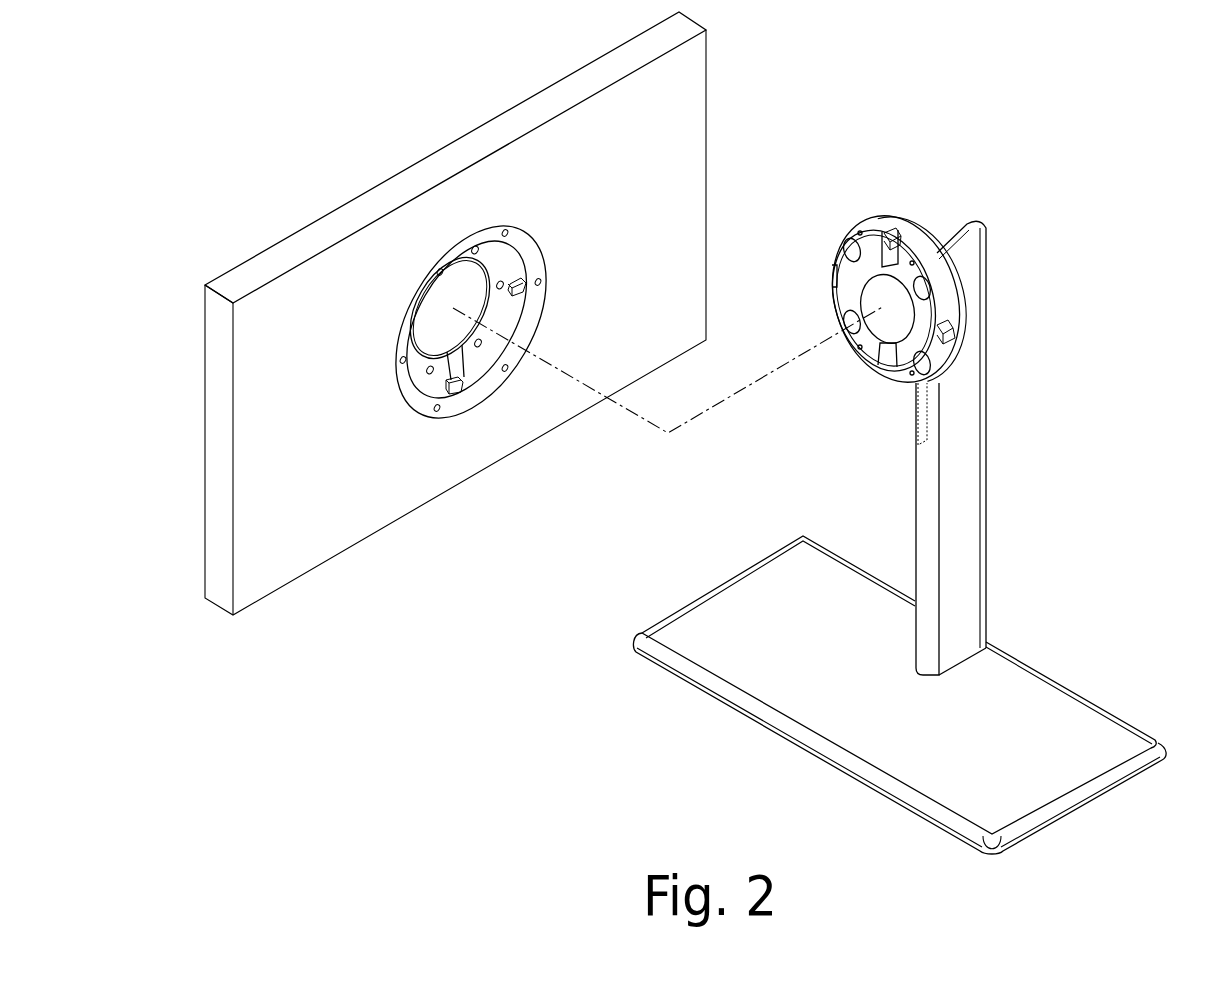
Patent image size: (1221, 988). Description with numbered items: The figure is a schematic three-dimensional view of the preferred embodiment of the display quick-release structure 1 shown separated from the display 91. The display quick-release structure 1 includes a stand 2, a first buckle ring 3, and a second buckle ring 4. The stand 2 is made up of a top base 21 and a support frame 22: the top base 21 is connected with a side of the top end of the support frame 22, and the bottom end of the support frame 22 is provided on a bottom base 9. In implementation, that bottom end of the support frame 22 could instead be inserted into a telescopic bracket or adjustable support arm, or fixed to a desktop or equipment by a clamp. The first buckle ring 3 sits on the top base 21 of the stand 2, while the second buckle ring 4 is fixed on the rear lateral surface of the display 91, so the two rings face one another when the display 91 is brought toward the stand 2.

The display 91 is at (480, 143).
The second buckle ring 4 is at (462, 405).
The display quick-release structure 1 is at (986, 156).
The stand 2 is at (1038, 327).
The top base 21 is at (872, 207).
The support frame 22 is at (973, 408).
The first buckle ring 3 is at (897, 228).
The bottom base 9 is at (1063, 705).